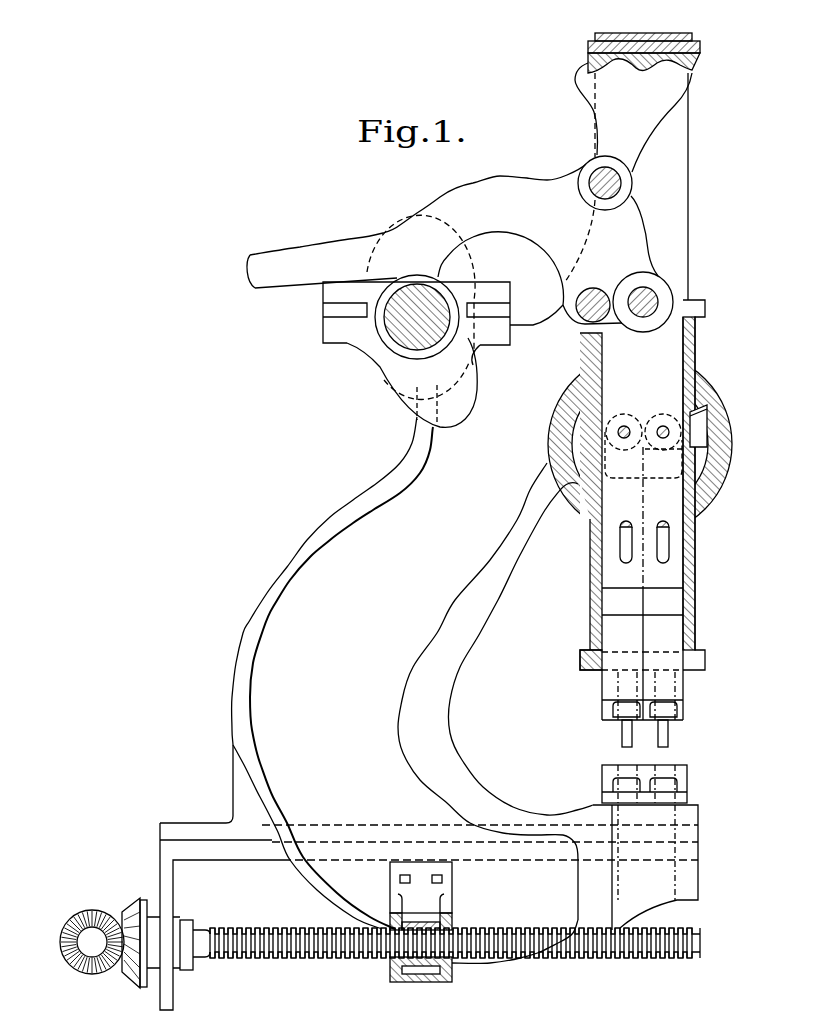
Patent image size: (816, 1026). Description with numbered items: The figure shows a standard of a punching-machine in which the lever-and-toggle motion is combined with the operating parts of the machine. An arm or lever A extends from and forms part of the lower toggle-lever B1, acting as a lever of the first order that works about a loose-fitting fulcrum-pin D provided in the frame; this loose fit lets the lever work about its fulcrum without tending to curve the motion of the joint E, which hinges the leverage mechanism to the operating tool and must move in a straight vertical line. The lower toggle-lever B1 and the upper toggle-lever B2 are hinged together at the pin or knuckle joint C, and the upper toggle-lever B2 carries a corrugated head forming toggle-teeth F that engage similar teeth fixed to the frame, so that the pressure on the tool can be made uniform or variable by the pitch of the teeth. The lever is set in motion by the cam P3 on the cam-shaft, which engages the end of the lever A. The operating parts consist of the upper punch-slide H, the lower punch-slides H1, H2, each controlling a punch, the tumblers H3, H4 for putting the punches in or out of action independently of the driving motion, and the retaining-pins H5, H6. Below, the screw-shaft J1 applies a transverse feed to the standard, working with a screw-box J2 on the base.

The arm or lever A is at (434, 244).
The lower toggle-lever B1 is at (611, 239).
The upper toggle-lever B2 is at (633, 117).
The pin or knuckle joint C is at (622, 185).
The fulcrum-pin D is at (585, 312).
The joint or pin E is at (658, 297).
The toggle-teeth F is at (700, 68).
The cam P3 is at (477, 380).
The upper punch-slide H is at (640, 510).
The lower punch-slide H1 is at (622, 654).
The lower punch-slide H2 is at (663, 629).
The tumbler H3 is at (644, 446).
The tumbler H4 is at (701, 428).
The retaining-pin H5 is at (626, 526).
The retaining-pin H6 is at (664, 526).
The screw-shaft J1 is at (313, 960).
The screw nut J2 is at (452, 922).